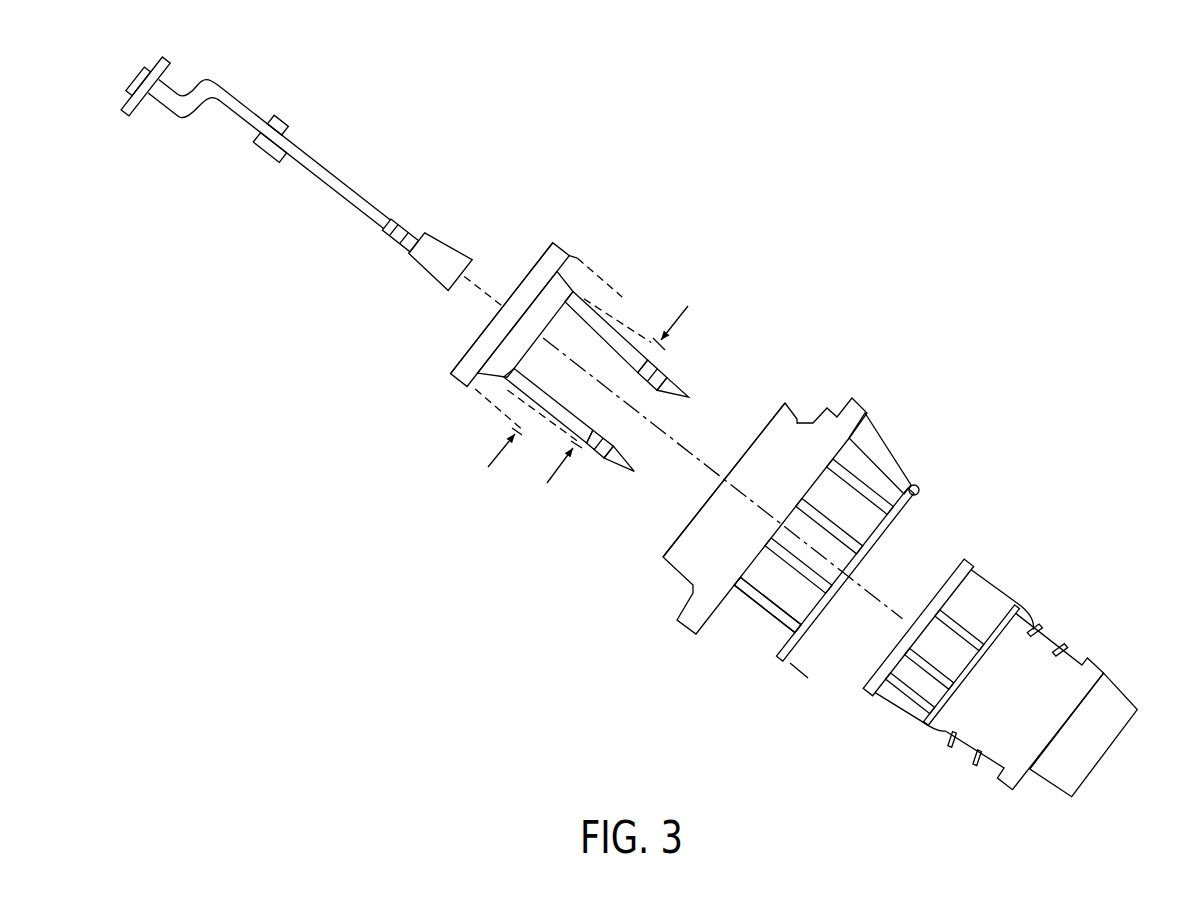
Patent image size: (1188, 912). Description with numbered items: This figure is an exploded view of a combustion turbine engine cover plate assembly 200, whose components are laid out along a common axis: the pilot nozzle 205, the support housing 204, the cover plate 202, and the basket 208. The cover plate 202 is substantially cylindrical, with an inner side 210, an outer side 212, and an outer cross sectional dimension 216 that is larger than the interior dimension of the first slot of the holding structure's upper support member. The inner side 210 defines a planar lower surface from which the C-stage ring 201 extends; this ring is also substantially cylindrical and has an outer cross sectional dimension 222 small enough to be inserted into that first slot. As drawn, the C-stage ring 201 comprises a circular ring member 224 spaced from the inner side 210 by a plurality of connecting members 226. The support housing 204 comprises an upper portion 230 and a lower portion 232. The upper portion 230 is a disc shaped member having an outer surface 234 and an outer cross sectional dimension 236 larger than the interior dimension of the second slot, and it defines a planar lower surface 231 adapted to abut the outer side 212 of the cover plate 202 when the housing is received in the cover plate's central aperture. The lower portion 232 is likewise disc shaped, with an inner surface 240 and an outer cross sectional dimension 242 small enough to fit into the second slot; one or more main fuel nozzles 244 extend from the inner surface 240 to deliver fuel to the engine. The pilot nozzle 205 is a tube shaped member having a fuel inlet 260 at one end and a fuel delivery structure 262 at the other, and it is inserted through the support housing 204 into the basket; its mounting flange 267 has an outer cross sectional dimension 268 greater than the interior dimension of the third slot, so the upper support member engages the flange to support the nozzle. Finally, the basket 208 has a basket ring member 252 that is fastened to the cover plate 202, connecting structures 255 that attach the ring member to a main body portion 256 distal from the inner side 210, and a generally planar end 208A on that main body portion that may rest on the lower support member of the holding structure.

The cover plate assembly 200 is at (736, 208).
The C-stage ring 201 is at (937, 504).
The cover plate 202 is at (674, 574).
The support housing 204 is at (469, 343).
The pilot nozzle 205 is at (126, 89).
The basket 208 is at (1132, 729).
The generally planar end 208A is at (1112, 747).
The inner side 210 is at (740, 578).
The outer side 212 is at (772, 421).
The outer cross sectional dimension 216 is at (882, 428).
The outer cross sectional dimension 222 is at (798, 680).
The circular ring member 224 is at (822, 614).
The connecting members 226 is at (750, 610).
The upper portion 230 is at (567, 250).
The planar lower surface 231 is at (472, 378).
The lower portion 232 is at (570, 252).
The outer surface 234 is at (541, 262).
The outer cross sectional dimension 236 is at (492, 462).
The inner surface 240 is at (655, 257).
The outer cross sectional dimension 242 is at (674, 323).
The main fuel nozzles 244 is at (637, 462).
The basket ring member 252 is at (947, 582).
The connecting structures 255 is at (991, 592).
The main body portion 256 is at (1047, 642).
The fuel inlet 260 is at (156, 62).
The fuel delivery structure 262 is at (454, 261).
The mounting flange 267 is at (302, 127).
The outer cross sectional dimension 268 is at (270, 163).